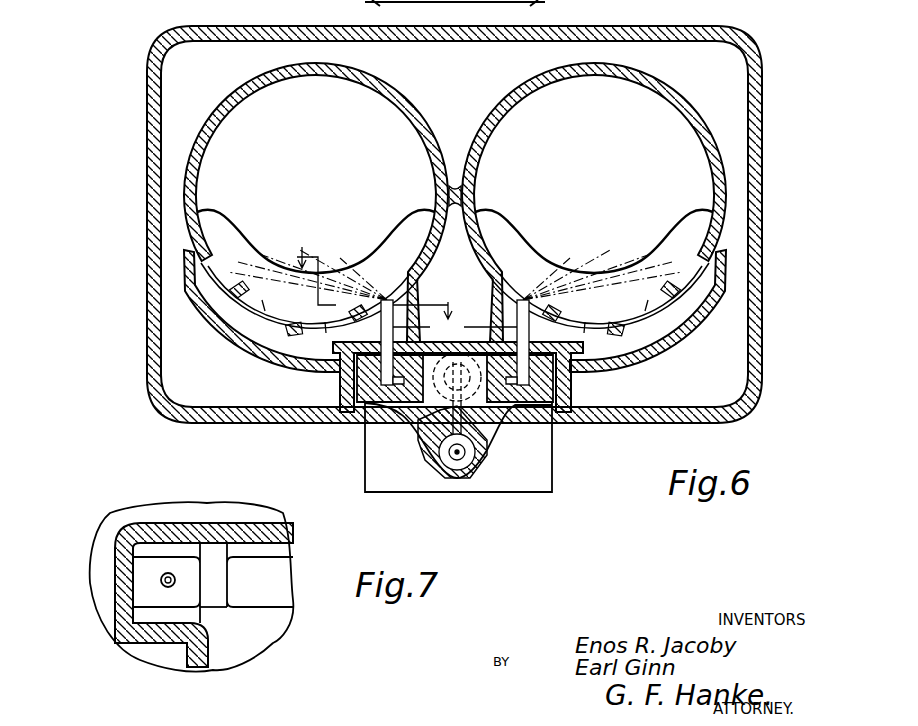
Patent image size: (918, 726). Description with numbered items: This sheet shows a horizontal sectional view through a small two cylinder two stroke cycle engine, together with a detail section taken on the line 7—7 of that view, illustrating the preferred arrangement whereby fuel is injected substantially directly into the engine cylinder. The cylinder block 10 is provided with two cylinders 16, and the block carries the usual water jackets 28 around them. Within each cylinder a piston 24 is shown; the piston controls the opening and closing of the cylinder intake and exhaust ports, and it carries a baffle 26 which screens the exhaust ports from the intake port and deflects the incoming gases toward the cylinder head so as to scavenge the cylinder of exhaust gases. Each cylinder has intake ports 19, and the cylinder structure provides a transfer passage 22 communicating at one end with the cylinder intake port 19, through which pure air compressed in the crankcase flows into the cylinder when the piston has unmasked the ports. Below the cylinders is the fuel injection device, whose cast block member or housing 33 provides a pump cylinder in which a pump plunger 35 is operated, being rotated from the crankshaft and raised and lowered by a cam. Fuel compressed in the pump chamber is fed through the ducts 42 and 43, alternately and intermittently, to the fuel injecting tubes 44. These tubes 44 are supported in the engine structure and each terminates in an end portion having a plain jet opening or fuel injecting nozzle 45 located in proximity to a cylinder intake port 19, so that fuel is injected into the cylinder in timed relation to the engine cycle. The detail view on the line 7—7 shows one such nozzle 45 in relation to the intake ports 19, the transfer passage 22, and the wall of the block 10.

In FIG. 6, the cylinder block 10 is at (764, 84).
In FIG. 7, the cylinder block 10 is at (118, 655).
In FIG. 6, the cylinders 16 is at (203, 122).
In FIG. 6, the intake ports 19 is at (213, 277).
In FIG. 7, the intake ports 19 is at (260, 598).
In FIG. 6, the transfer passage 22 is at (258, 335).
In FIG. 7, the transfer passage 22 is at (218, 662).
In FIG. 6, the piston 24 is at (234, 165).
In FIG. 6, the baffle 26 is at (358, 245).
In FIG. 6, the water jacket 28 is at (737, 193).
In FIG. 6, the housing 33 is at (540, 488).
In FIG. 6, the pump plunger 35 is at (508, 425).
In FIG. 6, the duct 42 is at (392, 402).
In FIG. 6, the duct 43 is at (480, 398).
In FIG. 6, the tubes 44 is at (458, 366).
In FIG. 7, the tubes 44 is at (172, 583).
In FIG. 6, the fuel injecting nozzle 45 is at (383, 300).
In FIG. 7, the fuel injecting nozzle 45 is at (165, 576).
In FIG. 6, the section line 7— 7 is at (408, 281).